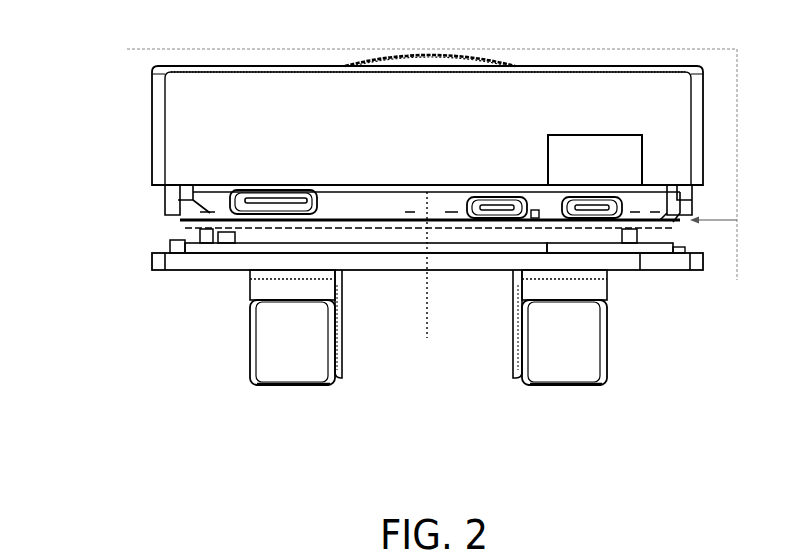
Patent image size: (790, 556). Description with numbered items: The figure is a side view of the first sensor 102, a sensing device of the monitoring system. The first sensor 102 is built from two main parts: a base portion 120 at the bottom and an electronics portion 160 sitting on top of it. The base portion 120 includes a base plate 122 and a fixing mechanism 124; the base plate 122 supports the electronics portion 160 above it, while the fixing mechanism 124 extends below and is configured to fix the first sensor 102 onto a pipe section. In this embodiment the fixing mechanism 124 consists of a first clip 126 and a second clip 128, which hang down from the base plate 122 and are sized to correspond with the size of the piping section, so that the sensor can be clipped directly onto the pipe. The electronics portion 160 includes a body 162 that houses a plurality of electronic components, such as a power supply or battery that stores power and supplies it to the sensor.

The first sensor 102 is at (110, 40).
The electronics portion 160 is at (124, 103).
The body 162 is at (272, 65).
The base portion 120 is at (129, 219).
The base plate 122 is at (152, 260).
The fixing mechanism 124 is at (525, 385).
The first clip 126 is at (253, 323).
The second clip 128 is at (604, 338).